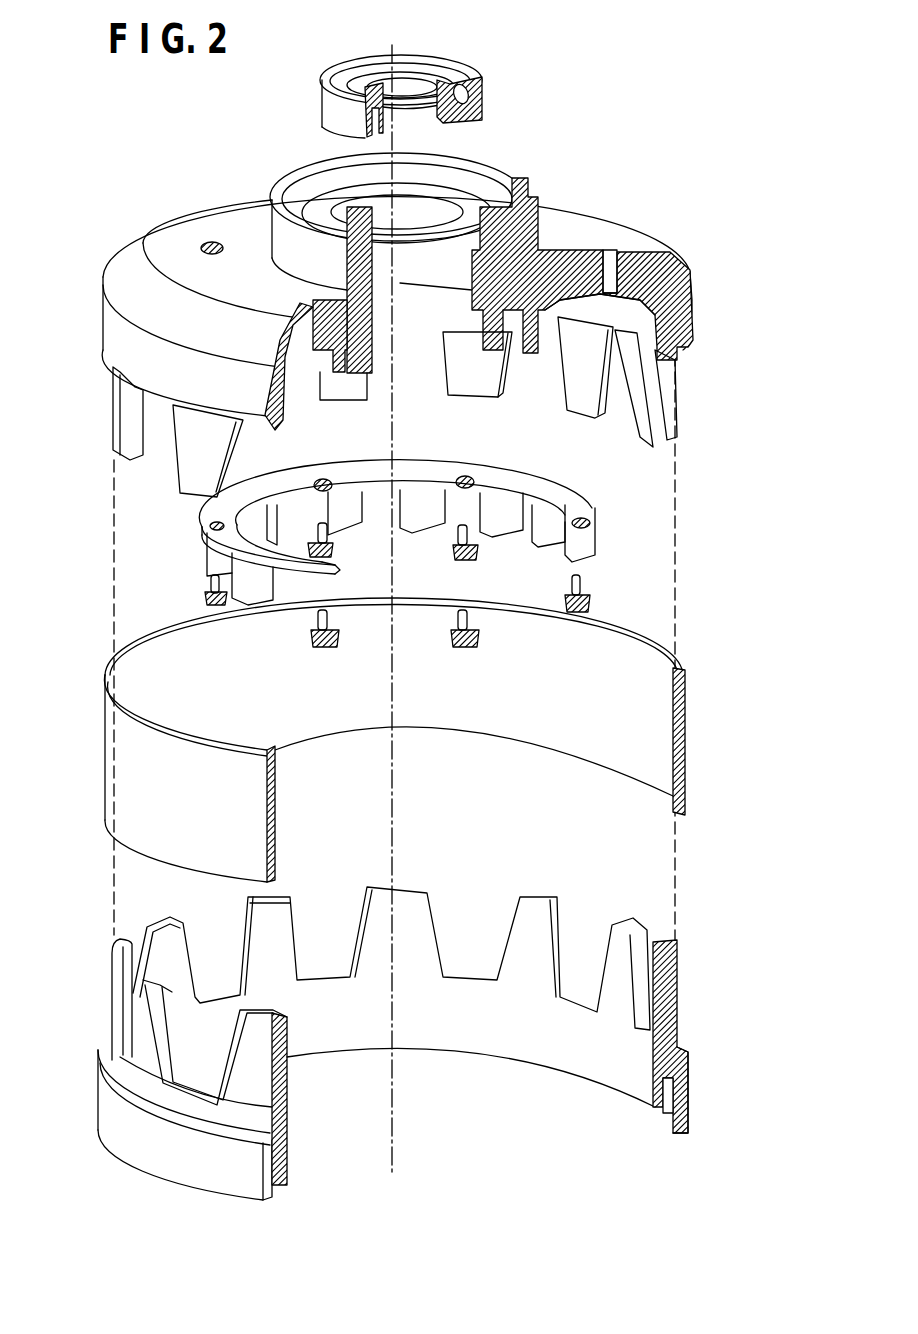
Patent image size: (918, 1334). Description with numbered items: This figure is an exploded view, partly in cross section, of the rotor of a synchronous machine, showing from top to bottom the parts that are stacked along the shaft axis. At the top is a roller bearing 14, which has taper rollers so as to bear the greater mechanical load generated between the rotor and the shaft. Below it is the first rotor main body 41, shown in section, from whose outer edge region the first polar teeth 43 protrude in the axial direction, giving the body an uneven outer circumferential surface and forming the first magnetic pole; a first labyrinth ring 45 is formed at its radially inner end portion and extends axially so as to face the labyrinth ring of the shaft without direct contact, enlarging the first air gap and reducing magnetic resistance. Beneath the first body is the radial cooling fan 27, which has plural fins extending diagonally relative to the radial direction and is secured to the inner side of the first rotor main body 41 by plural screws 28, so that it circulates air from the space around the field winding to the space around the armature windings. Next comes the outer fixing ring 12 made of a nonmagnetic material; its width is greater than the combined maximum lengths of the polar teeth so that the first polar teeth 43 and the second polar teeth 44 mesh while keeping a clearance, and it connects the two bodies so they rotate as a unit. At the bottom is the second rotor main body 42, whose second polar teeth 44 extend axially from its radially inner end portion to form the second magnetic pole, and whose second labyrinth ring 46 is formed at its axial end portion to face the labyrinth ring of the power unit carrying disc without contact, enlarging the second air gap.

The outer fixing ring 12 is at (688, 663).
The roller bearing 14 is at (487, 100).
The radial cooling fan 27 is at (582, 537).
The screws 28 is at (582, 590).
The first rotor main body 41 is at (700, 268).
The second rotor main body 42 is at (688, 1050).
The first polar teeth 43 is at (657, 407).
The second polar teeth 44 is at (560, 898).
The first labyrinth ring 45 is at (538, 290).
The second labyrinth ring 46 is at (690, 1110).